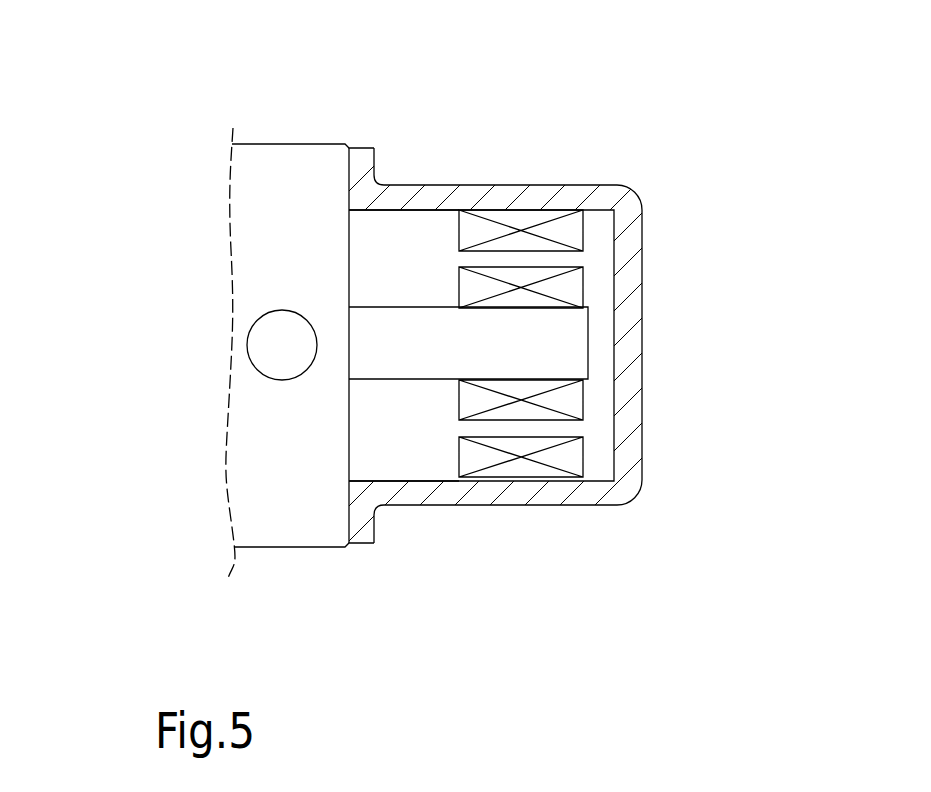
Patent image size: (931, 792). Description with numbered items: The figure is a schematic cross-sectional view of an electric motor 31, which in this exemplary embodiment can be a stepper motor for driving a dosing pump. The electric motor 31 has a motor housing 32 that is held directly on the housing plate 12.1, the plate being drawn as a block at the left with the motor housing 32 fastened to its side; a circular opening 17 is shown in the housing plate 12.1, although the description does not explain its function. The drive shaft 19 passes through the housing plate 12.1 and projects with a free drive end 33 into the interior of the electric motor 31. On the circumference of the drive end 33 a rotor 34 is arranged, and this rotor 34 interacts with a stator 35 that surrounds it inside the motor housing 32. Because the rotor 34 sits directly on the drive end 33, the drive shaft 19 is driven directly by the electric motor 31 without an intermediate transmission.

The housing plate 12.1 is at (283, 168).
The motor housing 32 is at (567, 192).
The free drive end 33 is at (568, 332).
The rotor 34 is at (568, 398).
The stator 35 is at (577, 455).
The bore / opening 17 is at (273, 345).
The drive shaft 19 is at (415, 367).
The electric motor 31 is at (530, 518).